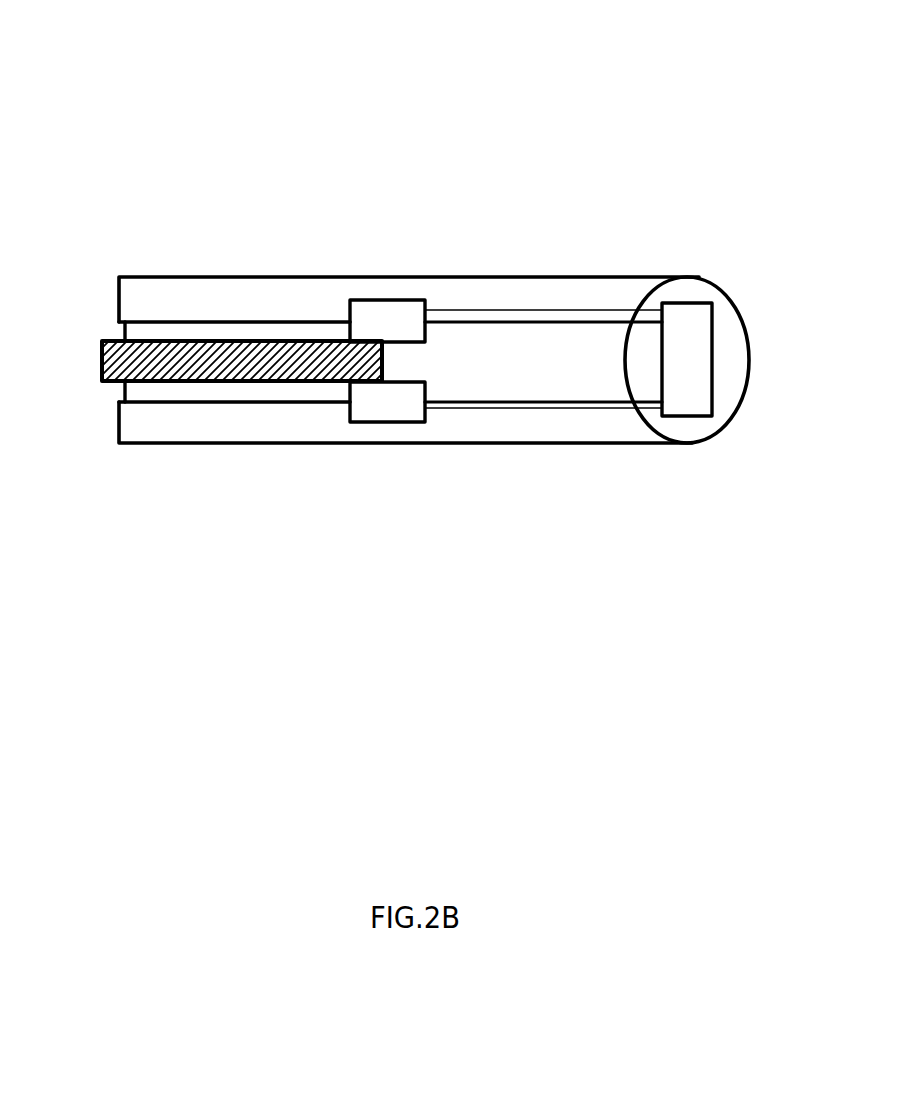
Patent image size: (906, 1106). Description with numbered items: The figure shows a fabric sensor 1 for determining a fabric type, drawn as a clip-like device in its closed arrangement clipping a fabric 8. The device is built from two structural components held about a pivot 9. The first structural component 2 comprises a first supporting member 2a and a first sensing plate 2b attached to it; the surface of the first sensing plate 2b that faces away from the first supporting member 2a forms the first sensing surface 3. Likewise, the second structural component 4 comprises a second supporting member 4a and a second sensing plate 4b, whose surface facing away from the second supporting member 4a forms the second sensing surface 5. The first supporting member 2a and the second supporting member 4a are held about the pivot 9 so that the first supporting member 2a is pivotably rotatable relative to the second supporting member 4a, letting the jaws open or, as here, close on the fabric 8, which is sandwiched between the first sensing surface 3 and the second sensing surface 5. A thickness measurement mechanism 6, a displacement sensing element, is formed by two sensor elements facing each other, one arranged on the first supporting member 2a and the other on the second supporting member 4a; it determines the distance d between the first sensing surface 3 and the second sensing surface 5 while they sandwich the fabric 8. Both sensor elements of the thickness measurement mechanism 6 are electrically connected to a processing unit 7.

The fabric sensor 1 is at (136, 94).
The first structural component 2 is at (310, 212).
The first supporting member 2a is at (376, 197).
The first sensing plate 2b is at (313, 333).
The first sensing surface 3 is at (222, 341).
The second structural component 4 is at (296, 522).
The second supporting member 4a is at (463, 428).
The second sensing plate 4b is at (320, 392).
The second sensing surface 5 is at (202, 383).
The thickness measurement mechanism 6 is at (427, 387).
The processing unit 7 is at (688, 417).
The fabric 8 is at (102, 363).
The pivot 9 is at (705, 280).
The distance d is at (75, 348).